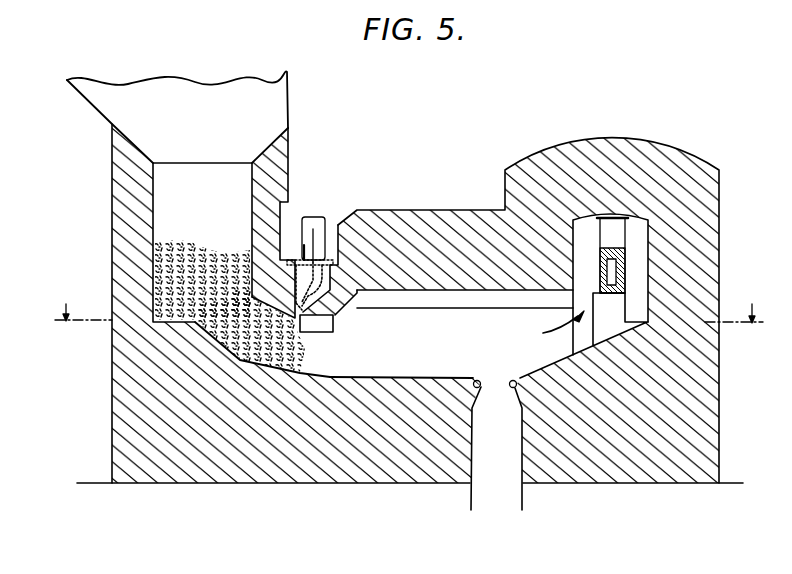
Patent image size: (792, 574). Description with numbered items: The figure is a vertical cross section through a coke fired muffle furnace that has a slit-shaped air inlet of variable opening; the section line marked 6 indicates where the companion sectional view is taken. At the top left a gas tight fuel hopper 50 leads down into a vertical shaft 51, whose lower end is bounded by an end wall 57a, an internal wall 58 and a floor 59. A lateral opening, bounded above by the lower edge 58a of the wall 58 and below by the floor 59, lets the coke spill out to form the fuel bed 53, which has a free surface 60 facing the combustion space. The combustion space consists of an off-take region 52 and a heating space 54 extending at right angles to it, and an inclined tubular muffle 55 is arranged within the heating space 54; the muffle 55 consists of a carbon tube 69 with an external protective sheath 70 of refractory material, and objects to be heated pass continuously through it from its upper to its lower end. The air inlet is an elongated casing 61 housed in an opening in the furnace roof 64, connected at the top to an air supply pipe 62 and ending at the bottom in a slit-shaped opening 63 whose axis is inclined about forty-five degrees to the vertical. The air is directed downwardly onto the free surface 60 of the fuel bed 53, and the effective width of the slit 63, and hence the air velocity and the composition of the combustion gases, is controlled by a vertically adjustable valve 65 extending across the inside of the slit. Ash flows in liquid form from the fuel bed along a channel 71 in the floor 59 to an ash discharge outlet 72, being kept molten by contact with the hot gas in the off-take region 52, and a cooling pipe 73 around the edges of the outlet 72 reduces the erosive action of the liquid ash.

The gas tight fuel hopper 50 is at (177, 117).
The vertical shaft 51 is at (170, 242).
The fuel bed 53 is at (277, 368).
The end wall 57a is at (137, 253).
The internal wall 58 is at (250, 300).
The lower edge of the wall 58a is at (282, 330).
The floor 59 is at (247, 360).
The air supply pipe 62 is at (305, 228).
The vertically adjustable valve 65 is at (314, 218).
The slit-shaped opening 63 is at (294, 308).
The furnace roof 64 is at (437, 240).
The elongated casing 61 is at (352, 304).
The free surface 60 is at (301, 345).
The off-take region 52 is at (470, 315).
The channel 71 is at (424, 378).
The ash discharge outlet 72 is at (492, 392).
The cooling pipe 73 is at (474, 380).
The heating space 54 is at (643, 270).
The inclined tubular muffle 55 is at (620, 288).
The carbon tube 69 is at (622, 262).
The external protective sheath 70 is at (615, 249).
The section line 6- 6 is at (412, 303).